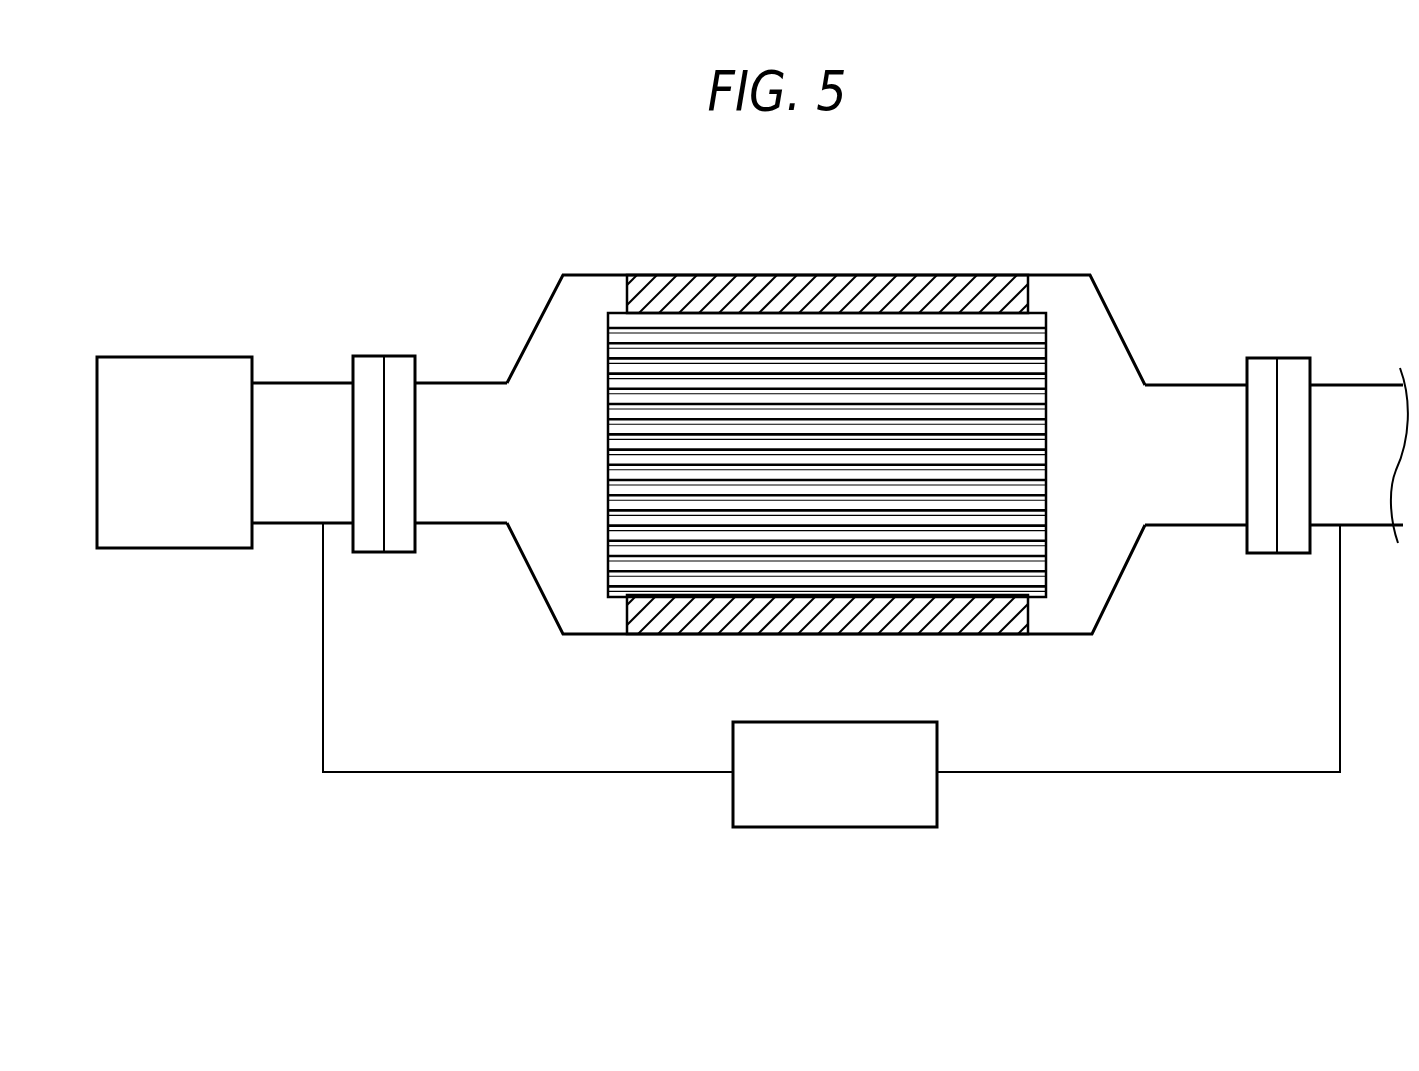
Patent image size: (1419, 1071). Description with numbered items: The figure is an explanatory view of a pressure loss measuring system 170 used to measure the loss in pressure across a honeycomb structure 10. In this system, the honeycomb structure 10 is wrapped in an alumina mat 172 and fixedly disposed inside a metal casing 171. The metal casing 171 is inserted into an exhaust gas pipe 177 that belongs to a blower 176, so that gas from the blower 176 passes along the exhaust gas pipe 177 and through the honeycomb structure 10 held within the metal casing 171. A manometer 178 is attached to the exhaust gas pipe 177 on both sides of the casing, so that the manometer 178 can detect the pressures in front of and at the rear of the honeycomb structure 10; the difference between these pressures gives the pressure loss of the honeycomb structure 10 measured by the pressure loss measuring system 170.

The honeycomb structure 10 is at (1070, 351).
The pressure loss measuring system 170 is at (880, 436).
The metal casing 171 is at (1045, 637).
The alumina mat 172 is at (715, 288).
The blower 176 is at (176, 357).
The exhaust gas pipe 177 is at (298, 390).
The manometer 178 is at (823, 828).